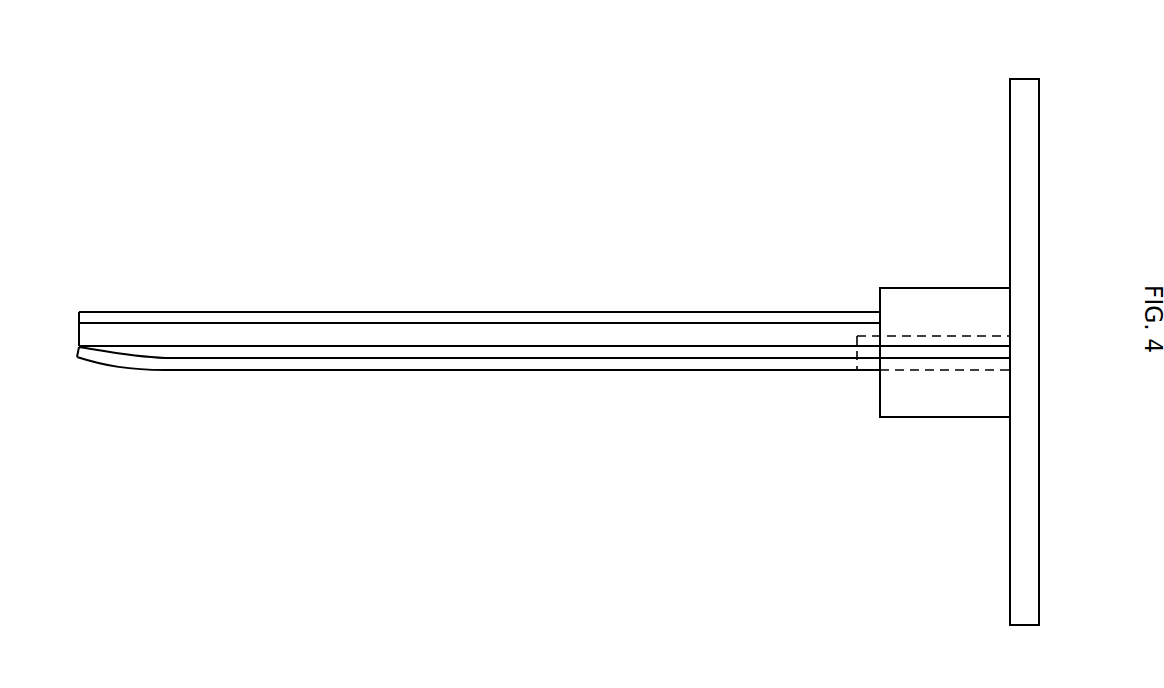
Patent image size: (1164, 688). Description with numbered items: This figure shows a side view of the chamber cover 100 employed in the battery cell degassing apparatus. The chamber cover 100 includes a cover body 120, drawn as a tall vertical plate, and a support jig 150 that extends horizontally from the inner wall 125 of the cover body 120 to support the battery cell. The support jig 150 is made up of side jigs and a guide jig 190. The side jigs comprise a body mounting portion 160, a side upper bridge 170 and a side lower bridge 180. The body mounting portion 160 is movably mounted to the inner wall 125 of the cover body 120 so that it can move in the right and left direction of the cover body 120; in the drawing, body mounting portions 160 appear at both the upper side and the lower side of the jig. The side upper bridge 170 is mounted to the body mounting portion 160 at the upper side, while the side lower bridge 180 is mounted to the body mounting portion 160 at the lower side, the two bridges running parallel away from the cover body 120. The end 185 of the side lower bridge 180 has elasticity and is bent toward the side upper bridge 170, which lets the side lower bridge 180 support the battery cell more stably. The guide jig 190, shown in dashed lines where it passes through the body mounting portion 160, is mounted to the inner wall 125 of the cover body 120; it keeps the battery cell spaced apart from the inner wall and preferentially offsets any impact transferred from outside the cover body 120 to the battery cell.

The chamber cover 100 is at (1043, 66).
The cover body 120 is at (1039, 121).
The inner wall 125 is at (1010, 110).
The support jig 150 is at (533, 246).
The body mounting portion 160 is at (923, 288).
The side upper bridge 170 is at (417, 311).
The side lower bridge 180 is at (417, 371).
The end of side lower bridge 185 is at (108, 367).
The guide jig 190 is at (987, 352).